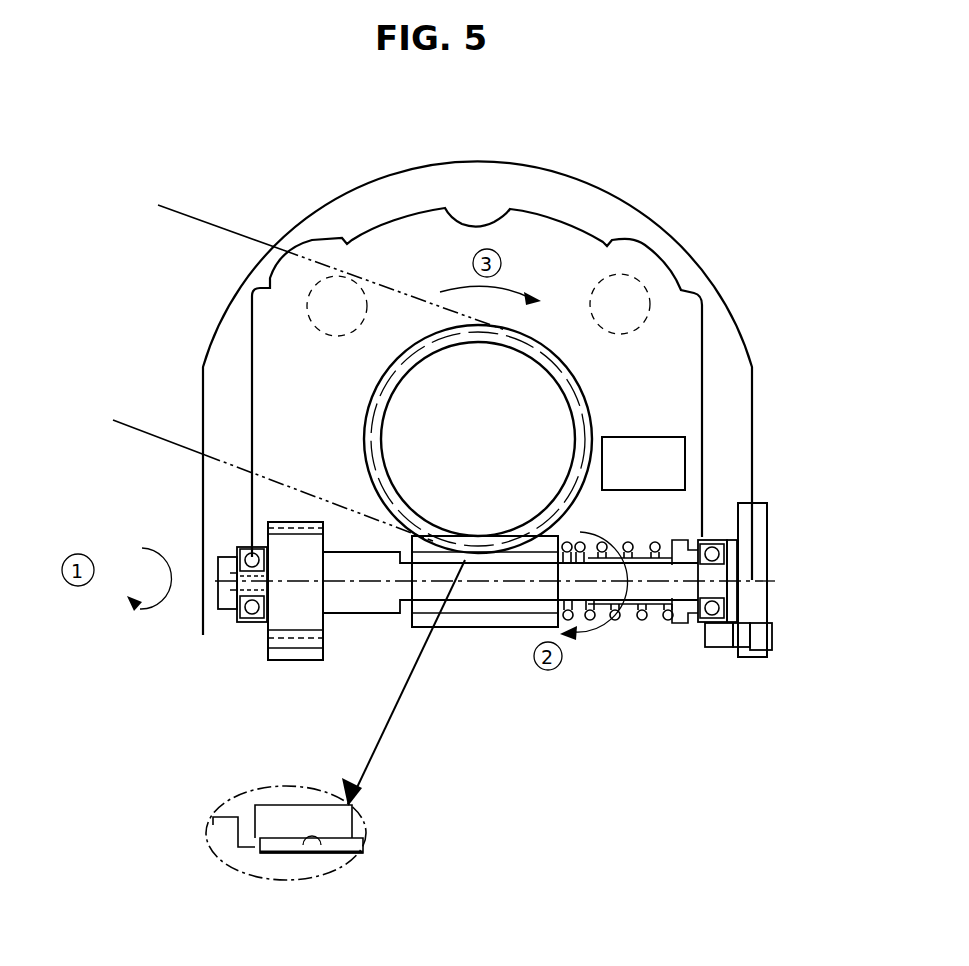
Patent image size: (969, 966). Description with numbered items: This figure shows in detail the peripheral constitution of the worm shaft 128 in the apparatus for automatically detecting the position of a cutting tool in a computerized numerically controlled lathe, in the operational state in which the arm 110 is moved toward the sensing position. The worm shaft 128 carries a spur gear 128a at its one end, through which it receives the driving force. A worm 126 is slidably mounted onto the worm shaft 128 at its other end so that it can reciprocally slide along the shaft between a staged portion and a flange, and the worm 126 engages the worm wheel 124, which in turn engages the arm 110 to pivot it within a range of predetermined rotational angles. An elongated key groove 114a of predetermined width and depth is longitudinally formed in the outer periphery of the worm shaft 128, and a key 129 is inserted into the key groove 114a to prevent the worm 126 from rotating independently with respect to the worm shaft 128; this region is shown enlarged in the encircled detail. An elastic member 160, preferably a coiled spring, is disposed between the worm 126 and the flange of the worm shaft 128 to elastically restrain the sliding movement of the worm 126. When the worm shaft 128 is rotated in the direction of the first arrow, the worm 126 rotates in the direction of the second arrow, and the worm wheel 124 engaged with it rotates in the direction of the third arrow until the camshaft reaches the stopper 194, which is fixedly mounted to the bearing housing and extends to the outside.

The arm 110 is at (222, 255).
The worm wheel 124 is at (553, 350).
The stopper 194 is at (677, 463).
The spur gear 128a is at (285, 550).
The worm shaft 128 is at (368, 602).
The elastic member 160 is at (633, 620).
The worm 126 is at (353, 823).
The key groove 114a is at (317, 850).
The key 129 is at (278, 845).